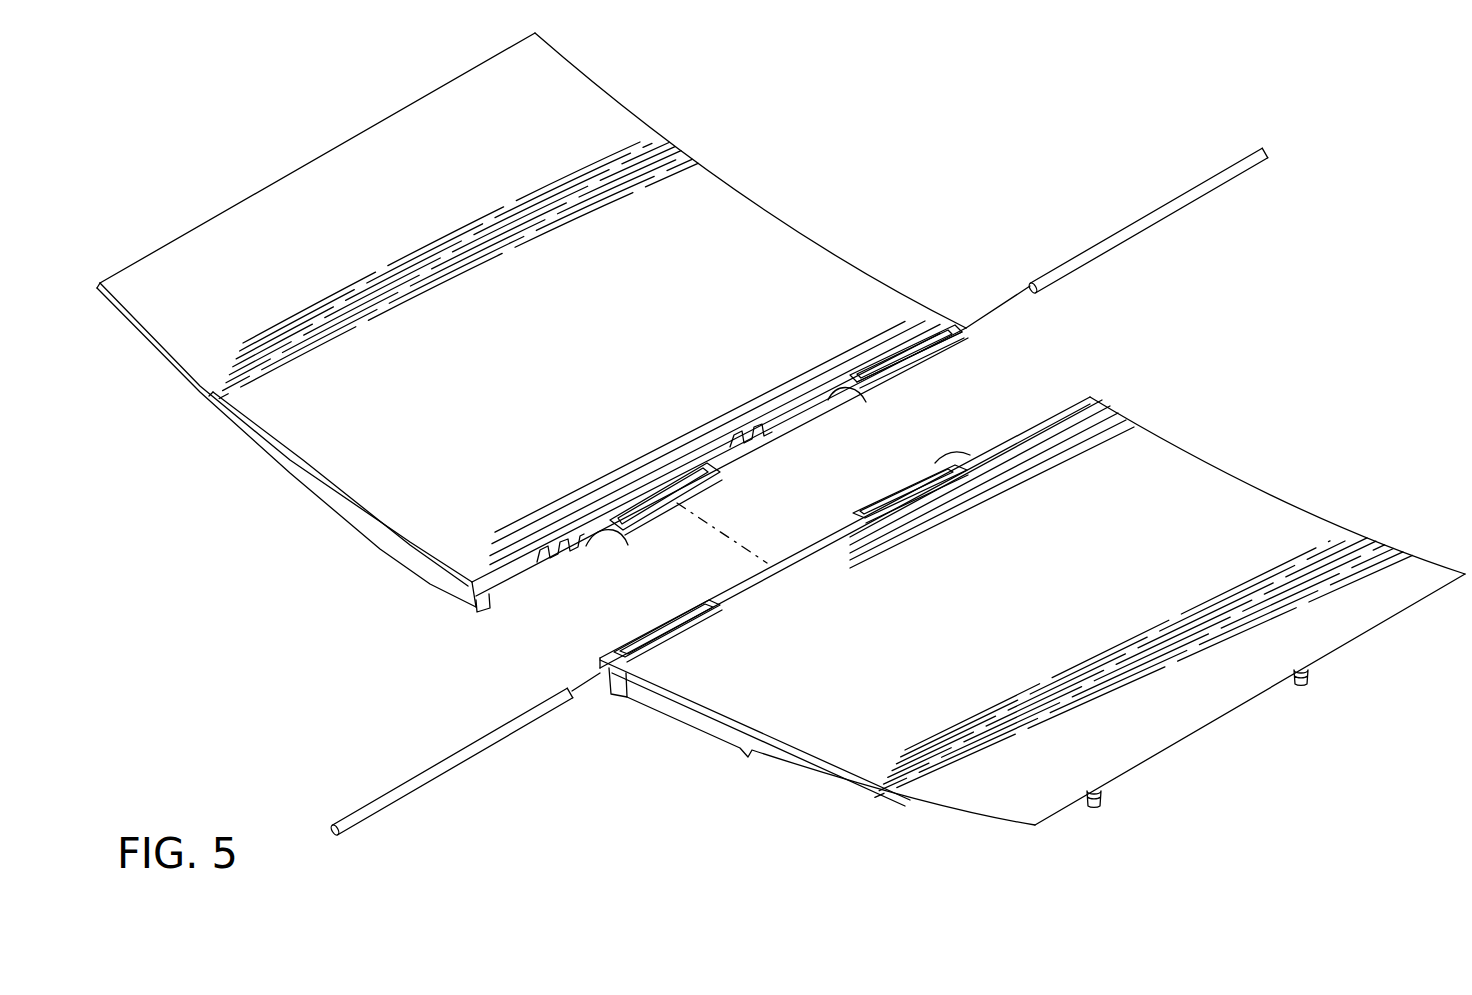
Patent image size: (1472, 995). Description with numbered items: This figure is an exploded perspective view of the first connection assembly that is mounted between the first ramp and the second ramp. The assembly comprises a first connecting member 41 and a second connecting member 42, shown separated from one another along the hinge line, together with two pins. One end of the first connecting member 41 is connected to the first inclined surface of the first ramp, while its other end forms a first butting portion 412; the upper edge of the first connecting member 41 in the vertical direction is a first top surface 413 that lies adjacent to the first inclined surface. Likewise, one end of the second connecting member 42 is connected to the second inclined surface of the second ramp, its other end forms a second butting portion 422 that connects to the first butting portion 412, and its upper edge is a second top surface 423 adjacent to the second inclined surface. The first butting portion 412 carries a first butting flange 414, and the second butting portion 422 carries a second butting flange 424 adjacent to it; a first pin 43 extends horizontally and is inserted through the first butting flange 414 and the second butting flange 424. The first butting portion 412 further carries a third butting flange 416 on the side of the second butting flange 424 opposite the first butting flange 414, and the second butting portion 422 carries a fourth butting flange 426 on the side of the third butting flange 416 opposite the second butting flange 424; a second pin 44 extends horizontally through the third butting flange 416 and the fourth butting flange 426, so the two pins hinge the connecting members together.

The first connecting member 41 is at (1288, 488).
The first butting portion 412 is at (975, 436).
The first top surface 413 is at (855, 680).
The first butting flange 414 is at (683, 602).
The third butting flange 416 is at (863, 507).
The second connecting member 42 is at (325, 550).
The second butting portion 422 is at (584, 572).
The second top surface 423 is at (706, 318).
The second butting flange 424 is at (645, 535).
The fourth butting flange 426 is at (917, 355).
The first pin 43 is at (508, 740).
The second pin 44 is at (1110, 242).